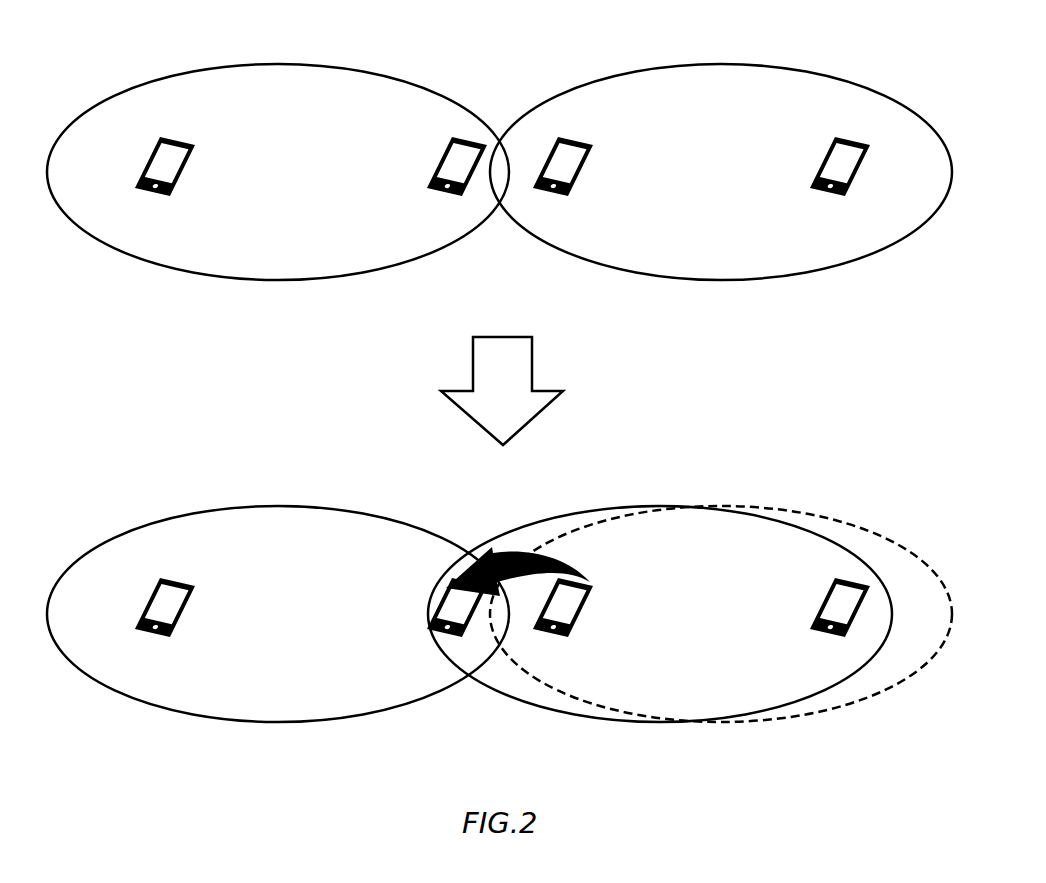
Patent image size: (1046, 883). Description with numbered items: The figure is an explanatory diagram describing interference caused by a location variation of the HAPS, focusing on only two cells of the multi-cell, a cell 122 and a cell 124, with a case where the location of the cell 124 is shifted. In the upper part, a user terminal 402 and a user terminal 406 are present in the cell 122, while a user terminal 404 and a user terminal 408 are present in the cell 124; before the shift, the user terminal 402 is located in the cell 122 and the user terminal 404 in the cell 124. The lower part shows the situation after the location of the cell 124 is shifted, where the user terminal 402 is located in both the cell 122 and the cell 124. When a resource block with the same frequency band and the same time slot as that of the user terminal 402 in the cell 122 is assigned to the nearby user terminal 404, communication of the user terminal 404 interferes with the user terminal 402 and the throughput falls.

The cell 122 is at (370, 48).
The cell 124 is at (632, 71).
The user terminal 402 is at (445, 199).
The user terminal 404 is at (559, 199).
The user terminal 406 is at (152, 199).
The user terminal 408 is at (826, 199).